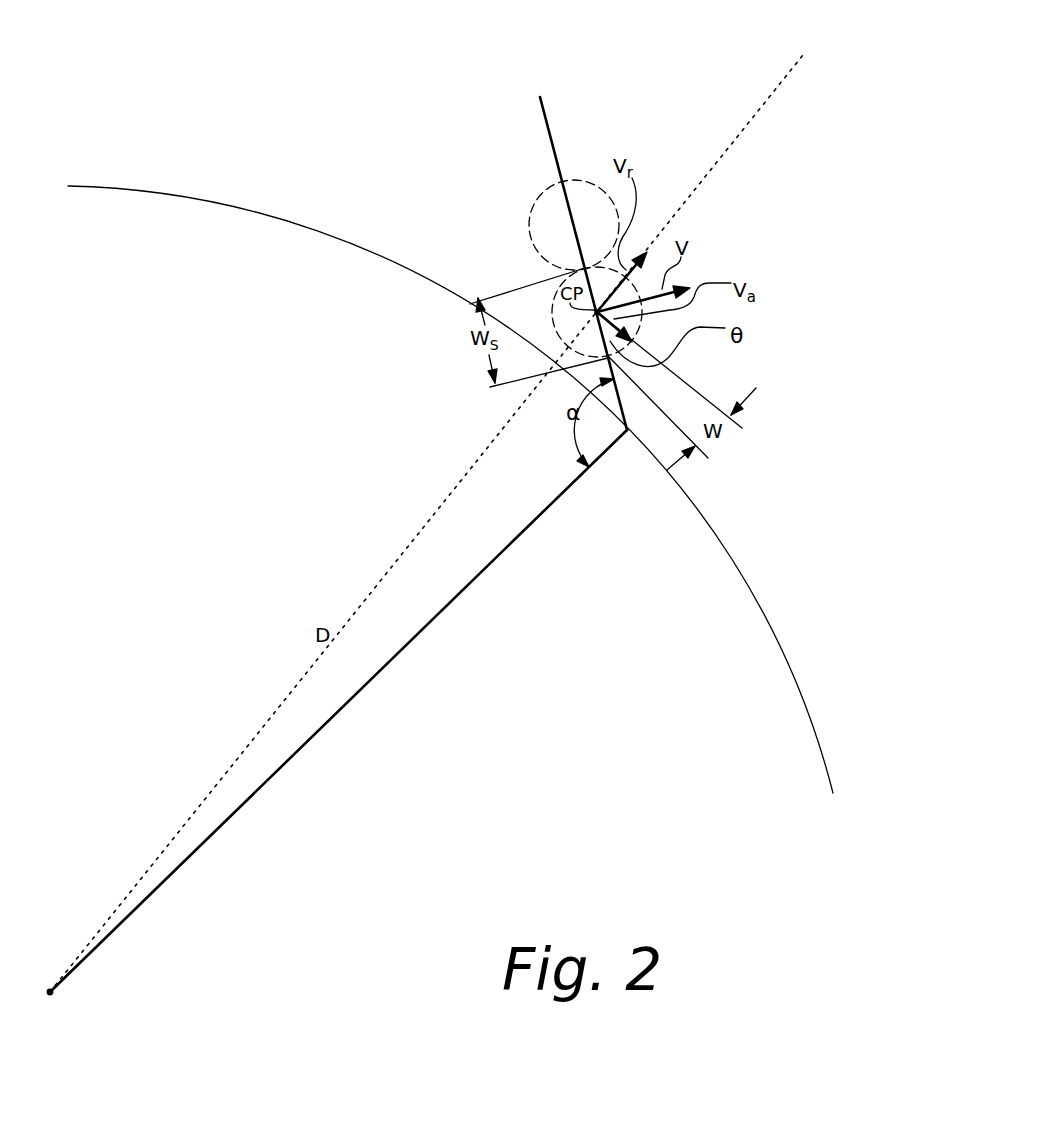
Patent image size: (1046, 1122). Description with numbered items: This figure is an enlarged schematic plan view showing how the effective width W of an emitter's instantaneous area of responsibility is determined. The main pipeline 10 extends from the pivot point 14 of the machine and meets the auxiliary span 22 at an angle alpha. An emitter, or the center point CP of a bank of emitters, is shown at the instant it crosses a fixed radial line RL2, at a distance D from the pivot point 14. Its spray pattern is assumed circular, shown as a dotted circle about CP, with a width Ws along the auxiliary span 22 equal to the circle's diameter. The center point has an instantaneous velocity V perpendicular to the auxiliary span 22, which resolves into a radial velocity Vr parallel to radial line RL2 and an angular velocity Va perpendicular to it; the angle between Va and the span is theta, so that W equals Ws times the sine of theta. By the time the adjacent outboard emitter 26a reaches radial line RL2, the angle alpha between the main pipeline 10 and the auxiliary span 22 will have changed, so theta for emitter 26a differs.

The main pipeline 10 is at (312, 738).
The pivot point 14 is at (50, 992).
The auxiliary span 22 is at (547, 110).
The adjacent outboard emitter 26a is at (560, 215).
The fixed radial line RL2 is at (778, 88).